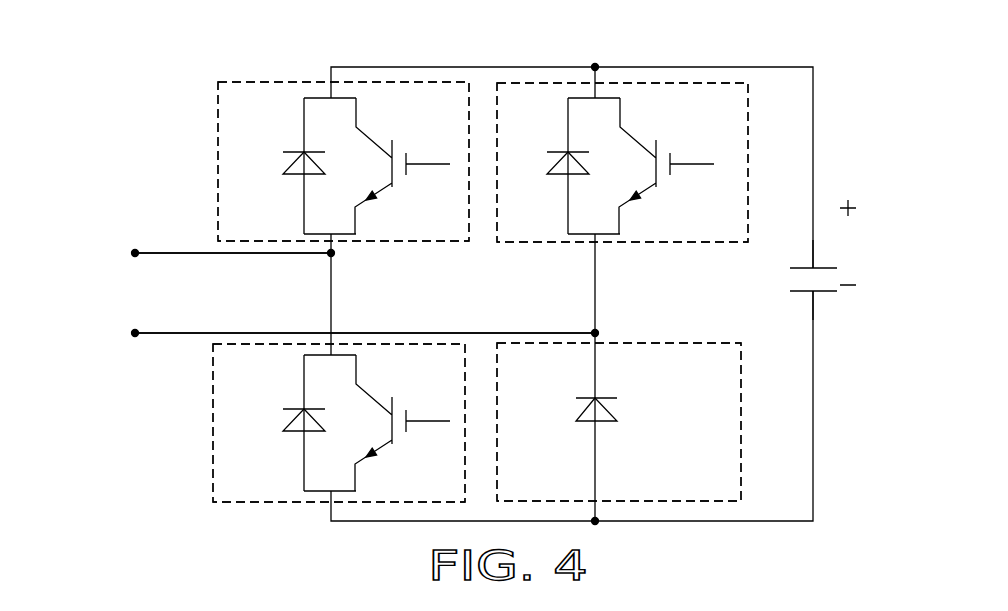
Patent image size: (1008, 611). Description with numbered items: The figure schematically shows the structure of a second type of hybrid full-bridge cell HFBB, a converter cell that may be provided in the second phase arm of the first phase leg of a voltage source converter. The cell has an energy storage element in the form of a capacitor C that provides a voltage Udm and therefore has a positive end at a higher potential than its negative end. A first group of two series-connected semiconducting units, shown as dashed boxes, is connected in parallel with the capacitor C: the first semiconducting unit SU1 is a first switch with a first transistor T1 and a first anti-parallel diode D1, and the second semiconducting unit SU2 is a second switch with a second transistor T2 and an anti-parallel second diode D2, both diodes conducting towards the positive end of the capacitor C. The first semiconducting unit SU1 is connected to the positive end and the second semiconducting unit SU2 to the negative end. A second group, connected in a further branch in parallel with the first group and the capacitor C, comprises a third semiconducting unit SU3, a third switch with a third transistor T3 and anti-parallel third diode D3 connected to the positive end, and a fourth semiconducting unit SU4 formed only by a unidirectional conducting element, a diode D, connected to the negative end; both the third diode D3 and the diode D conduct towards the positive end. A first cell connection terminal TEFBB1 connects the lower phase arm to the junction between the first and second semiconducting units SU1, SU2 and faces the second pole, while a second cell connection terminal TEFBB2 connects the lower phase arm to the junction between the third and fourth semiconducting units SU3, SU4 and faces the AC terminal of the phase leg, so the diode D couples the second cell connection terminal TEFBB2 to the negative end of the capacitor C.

The hybrid full-bridge cell HFBB is at (195, 101).
The first cell connection terminal TEFBB1 is at (182, 235).
The second cell connection terminal TEFBB2 is at (317, 316).
The first semiconducting unit SU1 is at (425, 242).
The second semiconducting unit SU2 is at (268, 500).
The third semiconducting unit SU3 is at (562, 243).
The fourth semiconducting unit SU4 is at (652, 340).
The first anti-parallel diode D1 is at (285, 166).
The first transistor T1 is at (402, 166).
The second diode D2 is at (285, 423).
The second transistor T2 is at (402, 423).
The third diode D3 is at (549, 166).
The third transistor T3 is at (666, 166).
The diode D is at (582, 427).
The capacitor C is at (797, 280).
The voltage Udm is at (870, 242).